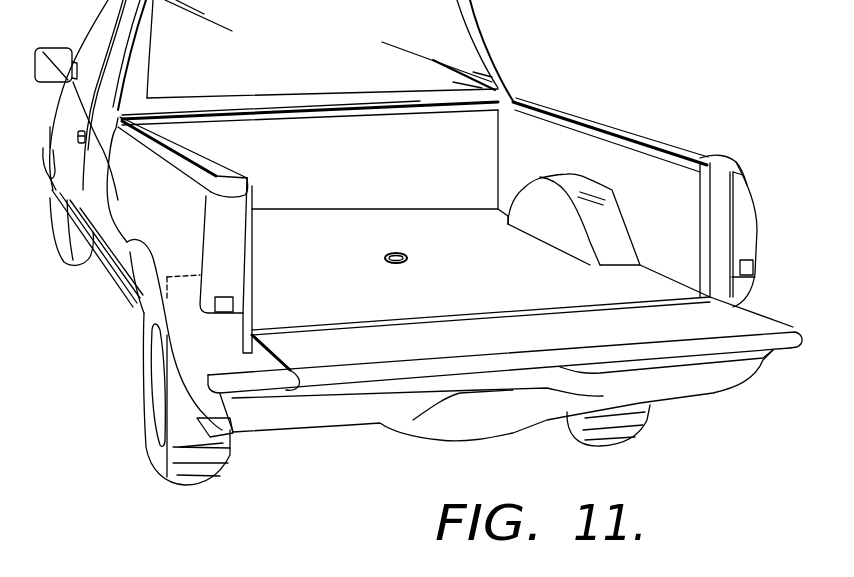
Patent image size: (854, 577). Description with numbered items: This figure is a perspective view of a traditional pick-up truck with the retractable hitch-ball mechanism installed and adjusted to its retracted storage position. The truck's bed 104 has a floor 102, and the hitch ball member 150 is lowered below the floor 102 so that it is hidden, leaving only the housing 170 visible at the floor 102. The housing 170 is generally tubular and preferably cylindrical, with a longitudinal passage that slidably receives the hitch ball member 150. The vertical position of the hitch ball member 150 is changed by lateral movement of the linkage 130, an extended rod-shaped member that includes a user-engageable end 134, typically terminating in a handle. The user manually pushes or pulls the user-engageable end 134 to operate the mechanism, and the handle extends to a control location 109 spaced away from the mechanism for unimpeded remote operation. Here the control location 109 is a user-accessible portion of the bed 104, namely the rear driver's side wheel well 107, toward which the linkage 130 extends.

The floor 102 is at (298, 316).
The bed 104 is at (470, 155).
The rear driver's side wheel well 107 is at (127, 245).
The control location 109 is at (132, 305).
The linkage 130 is at (185, 320).
The user-engageable end 134 is at (181, 276).
The hitch ball member 150 is at (399, 247).
The housing 170 is at (375, 258).